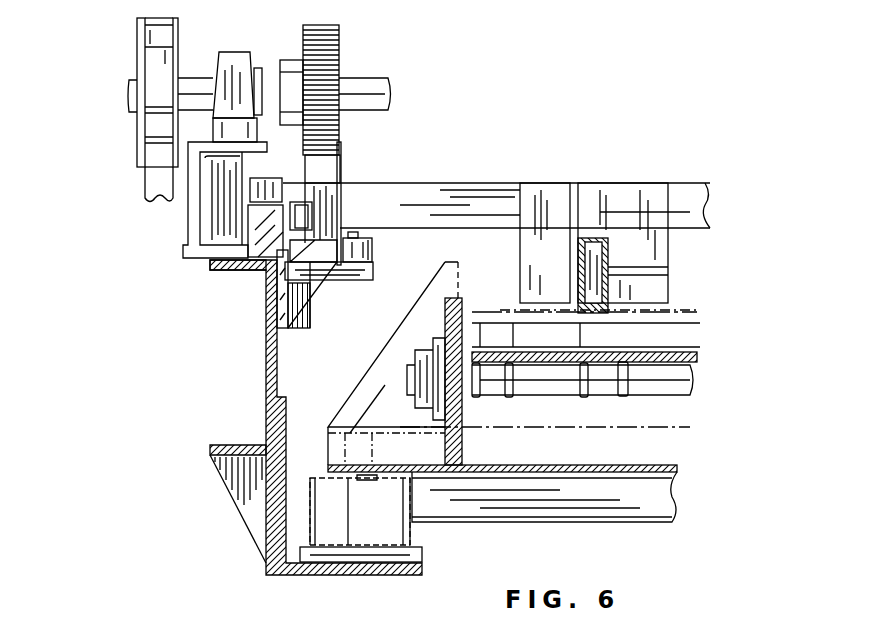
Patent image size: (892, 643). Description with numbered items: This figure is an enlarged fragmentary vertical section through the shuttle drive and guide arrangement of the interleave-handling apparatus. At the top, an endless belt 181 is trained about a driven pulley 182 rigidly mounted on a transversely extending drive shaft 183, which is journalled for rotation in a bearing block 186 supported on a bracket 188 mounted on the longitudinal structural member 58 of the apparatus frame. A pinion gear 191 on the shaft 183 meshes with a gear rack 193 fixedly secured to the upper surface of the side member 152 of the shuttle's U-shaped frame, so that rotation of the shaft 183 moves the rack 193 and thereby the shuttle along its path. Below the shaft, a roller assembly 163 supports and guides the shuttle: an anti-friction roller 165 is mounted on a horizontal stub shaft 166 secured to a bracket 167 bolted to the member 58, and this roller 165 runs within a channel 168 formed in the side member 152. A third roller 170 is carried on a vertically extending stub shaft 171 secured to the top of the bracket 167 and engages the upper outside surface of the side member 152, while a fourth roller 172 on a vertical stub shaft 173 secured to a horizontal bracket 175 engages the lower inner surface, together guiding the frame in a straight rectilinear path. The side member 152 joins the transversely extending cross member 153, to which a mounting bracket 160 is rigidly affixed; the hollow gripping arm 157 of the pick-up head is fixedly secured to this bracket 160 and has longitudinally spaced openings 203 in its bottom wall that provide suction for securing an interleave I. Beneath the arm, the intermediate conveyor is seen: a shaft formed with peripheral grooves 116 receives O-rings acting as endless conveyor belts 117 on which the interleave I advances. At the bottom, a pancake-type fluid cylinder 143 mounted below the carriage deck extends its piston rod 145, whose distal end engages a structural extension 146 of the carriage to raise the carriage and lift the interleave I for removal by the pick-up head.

The driven pulley 182 is at (137, 40).
The endless belt 181 is at (150, 186).
The drive shaft 183 is at (196, 87).
The bearing block 186 is at (243, 60).
The pinion gear 191 is at (339, 60).
The gear rack 193 is at (334, 170).
The side member 152 is at (327, 195).
The cross member 153 is at (488, 184).
The anti-friction roller 165 is at (337, 207).
The vertical stub shaft 173 is at (356, 236).
The fourth roller 172 is at (372, 250).
The third roller 170 is at (273, 183).
The vertically extending stub shaft 171 is at (270, 176).
The horizontal stub shaft 166 is at (283, 232).
The bracket 167 is at (258, 270).
The channel 168 is at (312, 270).
The roller assembly 163 is at (309, 310).
The horizontal bracket 175 is at (362, 280).
The longitudinal structural member 58 is at (268, 372).
The bracket 188 is at (190, 215).
The mounting bracket 160 is at (530, 240).
The gripping arm 157 is at (610, 252).
The opening 203 is at (588, 298).
The interleave I is at (697, 353).
The conveyor belt 117 is at (515, 400).
The peripheral groove 116 is at (508, 398).
The structural extension 146 is at (663, 465).
The piston rod 145 is at (352, 478).
The fluid cylinder 143 is at (408, 537).